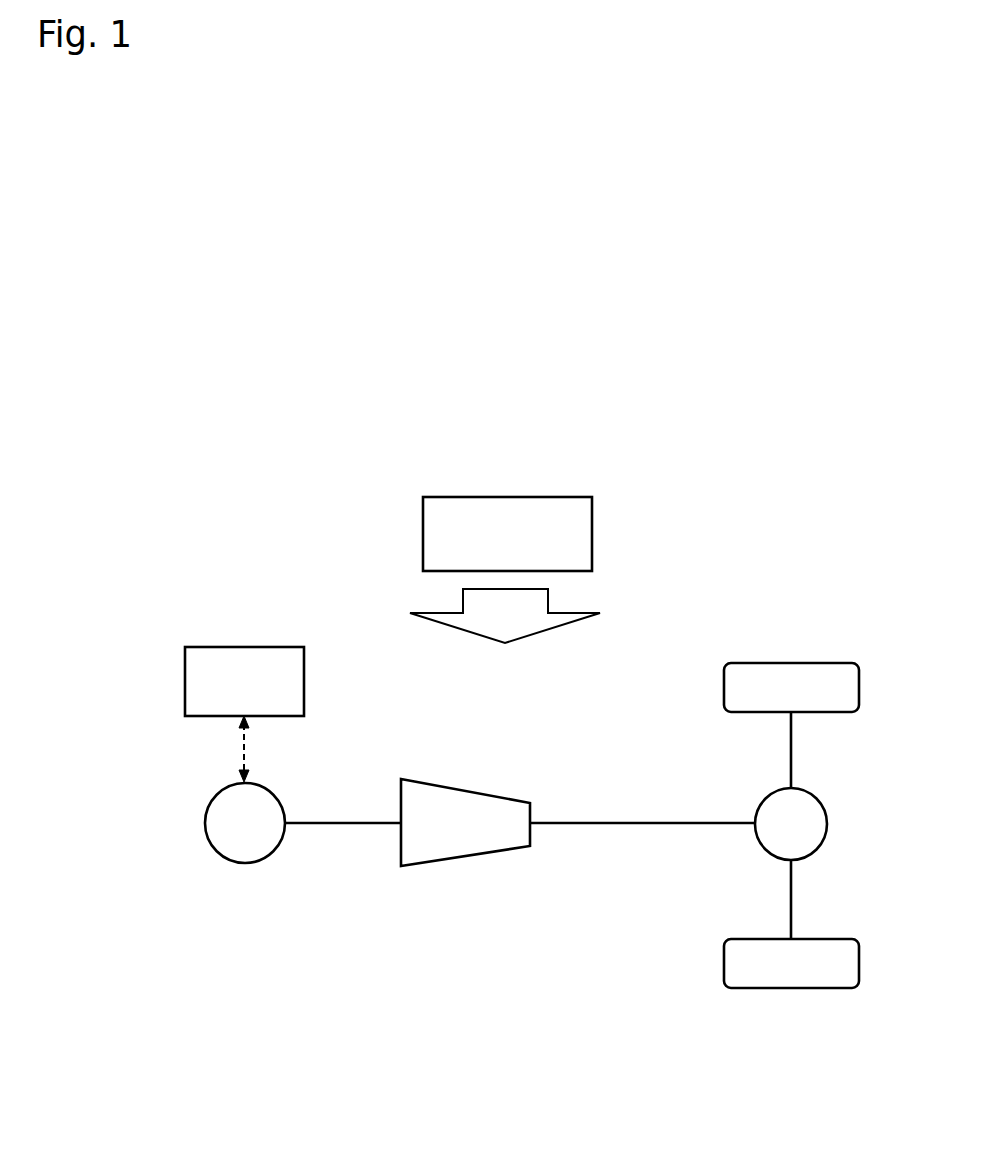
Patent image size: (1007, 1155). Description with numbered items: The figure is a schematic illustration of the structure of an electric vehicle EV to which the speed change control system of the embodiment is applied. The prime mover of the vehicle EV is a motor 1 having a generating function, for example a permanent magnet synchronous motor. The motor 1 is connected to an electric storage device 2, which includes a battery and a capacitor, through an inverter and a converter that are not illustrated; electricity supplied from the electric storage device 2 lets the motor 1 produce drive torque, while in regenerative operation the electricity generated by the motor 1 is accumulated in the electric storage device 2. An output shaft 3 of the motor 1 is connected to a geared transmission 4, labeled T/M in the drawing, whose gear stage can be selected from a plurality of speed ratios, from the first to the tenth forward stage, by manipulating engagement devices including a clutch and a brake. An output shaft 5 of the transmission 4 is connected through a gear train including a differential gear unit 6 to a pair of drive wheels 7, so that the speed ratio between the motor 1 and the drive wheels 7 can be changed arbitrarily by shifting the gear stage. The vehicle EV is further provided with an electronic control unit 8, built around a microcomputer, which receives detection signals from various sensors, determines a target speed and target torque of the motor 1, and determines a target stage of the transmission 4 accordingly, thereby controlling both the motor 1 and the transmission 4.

The electric vehicle EV is at (709, 498).
The motor 1 is at (248, 864).
The electric storage device 2 is at (248, 646).
The output shaft 3 is at (337, 822).
The geared transmission 4 is at (473, 792).
The output shaft 5 is at (613, 822).
The differential gear unit 6 is at (829, 824).
The drive wheels 7 is at (861, 688).
The electronic control unit 8 is at (508, 497).